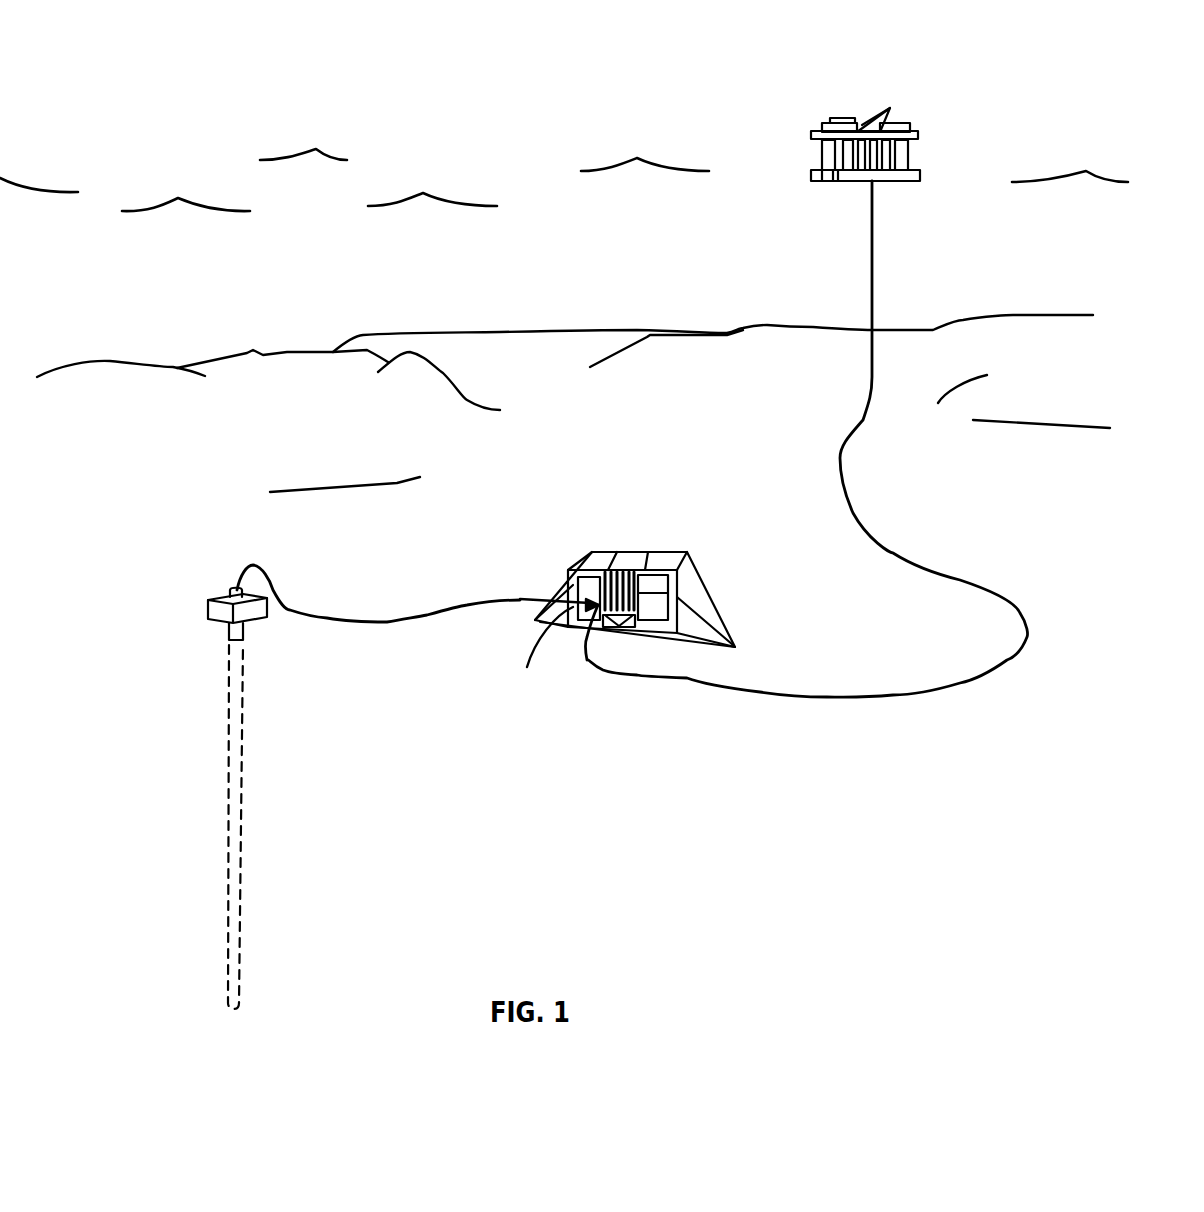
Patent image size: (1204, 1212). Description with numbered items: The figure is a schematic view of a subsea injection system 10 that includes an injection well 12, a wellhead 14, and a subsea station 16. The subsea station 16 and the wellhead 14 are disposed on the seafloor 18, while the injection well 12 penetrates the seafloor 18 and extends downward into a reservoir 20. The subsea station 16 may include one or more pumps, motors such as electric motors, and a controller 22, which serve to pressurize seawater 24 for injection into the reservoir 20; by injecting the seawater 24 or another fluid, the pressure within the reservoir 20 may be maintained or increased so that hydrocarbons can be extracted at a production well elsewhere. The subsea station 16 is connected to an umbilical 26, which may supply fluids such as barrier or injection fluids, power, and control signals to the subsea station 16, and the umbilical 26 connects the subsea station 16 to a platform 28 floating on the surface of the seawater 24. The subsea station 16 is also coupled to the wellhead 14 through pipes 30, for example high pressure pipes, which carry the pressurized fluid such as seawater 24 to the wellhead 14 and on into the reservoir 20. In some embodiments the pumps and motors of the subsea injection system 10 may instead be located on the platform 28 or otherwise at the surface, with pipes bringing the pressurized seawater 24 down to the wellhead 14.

The subsea injection system 10 is at (750, 425).
The injection well 12 is at (238, 743).
The wellhead 14 is at (222, 612).
The subsea station 16 is at (626, 546).
The seafloor 18 is at (990, 496).
The reservoir 20 is at (197, 950).
The controller 22 is at (556, 651).
The seawater 24 is at (789, 306).
The umbilical 26 is at (853, 698).
The platform 28 is at (900, 157).
The pipes 30 is at (387, 622).